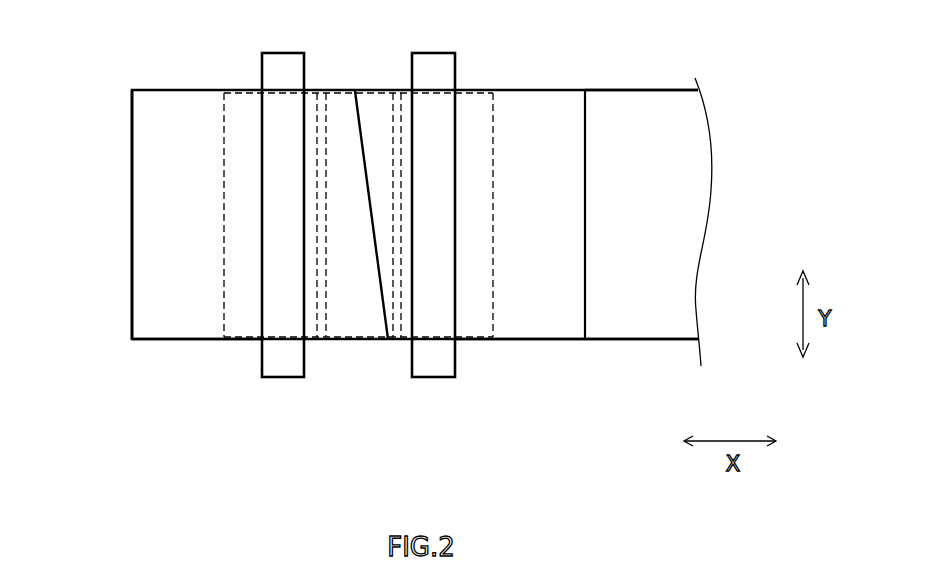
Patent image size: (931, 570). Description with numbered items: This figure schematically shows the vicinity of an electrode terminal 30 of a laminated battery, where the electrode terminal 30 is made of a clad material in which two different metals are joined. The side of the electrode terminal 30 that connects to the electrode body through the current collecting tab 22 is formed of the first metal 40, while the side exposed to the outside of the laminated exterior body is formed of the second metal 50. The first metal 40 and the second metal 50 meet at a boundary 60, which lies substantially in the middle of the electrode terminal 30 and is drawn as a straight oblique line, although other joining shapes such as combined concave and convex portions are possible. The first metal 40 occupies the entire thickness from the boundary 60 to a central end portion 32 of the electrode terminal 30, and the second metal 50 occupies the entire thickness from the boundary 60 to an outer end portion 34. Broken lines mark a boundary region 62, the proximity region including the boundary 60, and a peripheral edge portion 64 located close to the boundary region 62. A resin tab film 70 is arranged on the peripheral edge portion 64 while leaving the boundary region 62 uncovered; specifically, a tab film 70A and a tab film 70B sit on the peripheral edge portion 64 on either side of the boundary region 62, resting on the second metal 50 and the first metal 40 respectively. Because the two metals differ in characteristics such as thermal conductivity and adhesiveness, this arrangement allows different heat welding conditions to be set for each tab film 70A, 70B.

The current collecting tab 22 is at (649, 117).
The electrode terminal 30 is at (159, 90).
The central end portion 32 is at (585, 235).
The outer end portion 34 is at (132, 222).
The first metal 40 is at (535, 325).
The second metal 50 is at (195, 329).
The boundary 60 is at (365, 165).
The boundary region 62 is at (377, 108).
The peripheral edge portion 64 is at (245, 107).
The tab film 70 is at (358, 279).
The tab film 70A is at (287, 378).
The tab film 70B is at (419, 255).